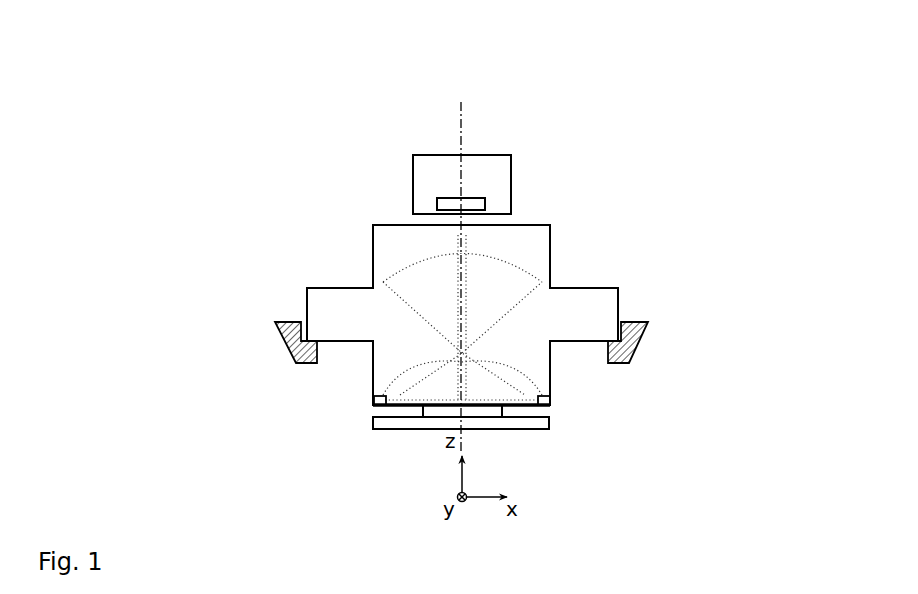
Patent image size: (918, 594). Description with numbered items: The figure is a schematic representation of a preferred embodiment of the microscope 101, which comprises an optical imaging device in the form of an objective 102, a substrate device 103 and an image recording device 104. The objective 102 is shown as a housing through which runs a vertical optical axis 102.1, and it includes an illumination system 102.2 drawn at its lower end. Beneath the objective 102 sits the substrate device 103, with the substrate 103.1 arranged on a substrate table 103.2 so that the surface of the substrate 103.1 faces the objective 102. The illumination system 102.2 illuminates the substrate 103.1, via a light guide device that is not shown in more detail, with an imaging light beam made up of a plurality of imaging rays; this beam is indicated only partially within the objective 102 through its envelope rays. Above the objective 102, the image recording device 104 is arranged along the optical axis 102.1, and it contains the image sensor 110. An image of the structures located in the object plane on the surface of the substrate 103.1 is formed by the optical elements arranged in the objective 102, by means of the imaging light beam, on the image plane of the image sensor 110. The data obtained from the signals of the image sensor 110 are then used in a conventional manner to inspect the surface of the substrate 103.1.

The microscope 101 is at (593, 109).
The objective 102 is at (574, 265).
The optical axis 102.1 is at (460, 107).
The illumination system 102.2 is at (553, 400).
The substrate device 103 is at (561, 420).
The substrate 103.1 is at (421, 412).
The substrate table 103.2 is at (371, 422).
The image recording device 104 is at (413, 190).
The image sensor 110 is at (489, 202).